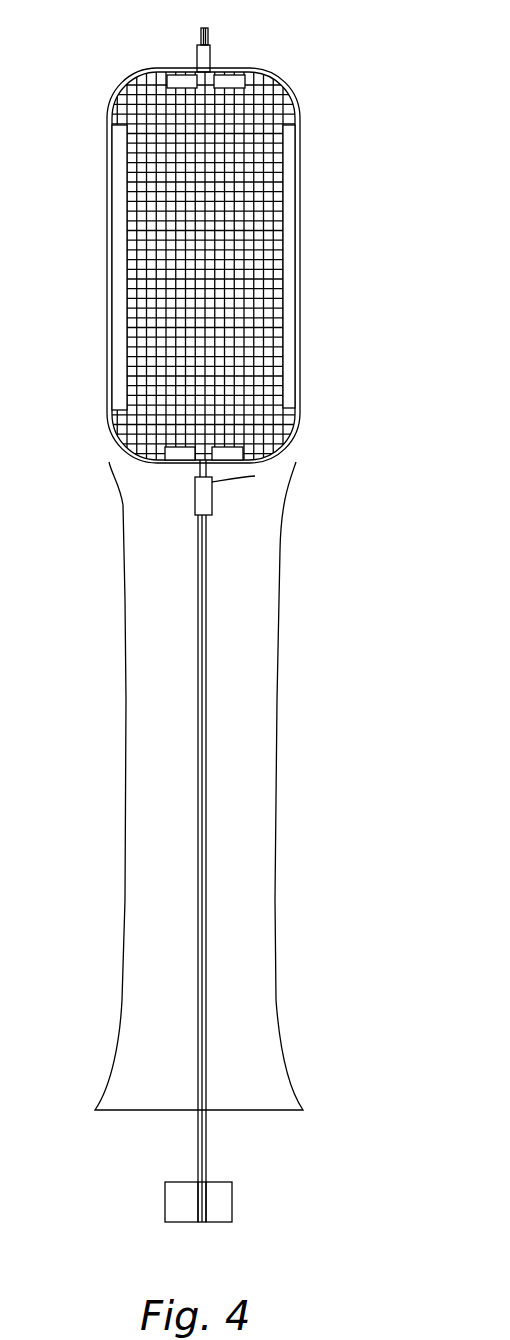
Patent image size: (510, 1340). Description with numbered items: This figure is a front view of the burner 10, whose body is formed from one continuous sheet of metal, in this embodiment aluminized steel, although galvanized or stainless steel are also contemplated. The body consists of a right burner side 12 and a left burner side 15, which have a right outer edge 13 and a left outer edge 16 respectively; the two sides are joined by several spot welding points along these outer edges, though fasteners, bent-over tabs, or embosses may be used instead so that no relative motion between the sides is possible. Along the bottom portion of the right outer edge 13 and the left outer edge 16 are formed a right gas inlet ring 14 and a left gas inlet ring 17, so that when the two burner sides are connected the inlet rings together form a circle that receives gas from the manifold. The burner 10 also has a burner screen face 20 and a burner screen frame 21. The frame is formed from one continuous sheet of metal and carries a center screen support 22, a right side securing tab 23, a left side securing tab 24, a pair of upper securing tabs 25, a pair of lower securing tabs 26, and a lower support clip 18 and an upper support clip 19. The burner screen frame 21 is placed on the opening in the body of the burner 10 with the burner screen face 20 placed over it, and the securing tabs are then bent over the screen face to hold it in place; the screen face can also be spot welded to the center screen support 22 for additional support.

The burner 10 is at (341, 47).
The right burner side 12 is at (156, 707).
The right outer edge 13 is at (198, 1150).
The right gas inlet ring 14 is at (165, 1198).
The left burner side 15 is at (247, 707).
The left outer edge 16 is at (206, 1150).
The left gas inlet ring 17 is at (232, 1198).
The lower support clip 18 is at (205, 500).
The upper support clip 19 is at (197, 57).
The burner screen face 20 is at (267, 111).
The burner screen frame 21 is at (300, 380).
The center screen support 22 is at (205, 207).
The right side securing tab 23 is at (117, 280).
The left side securing tab 24 is at (292, 276).
The upper securing tabs 25 is at (180, 84).
The lower securing tabs 26 is at (228, 455).